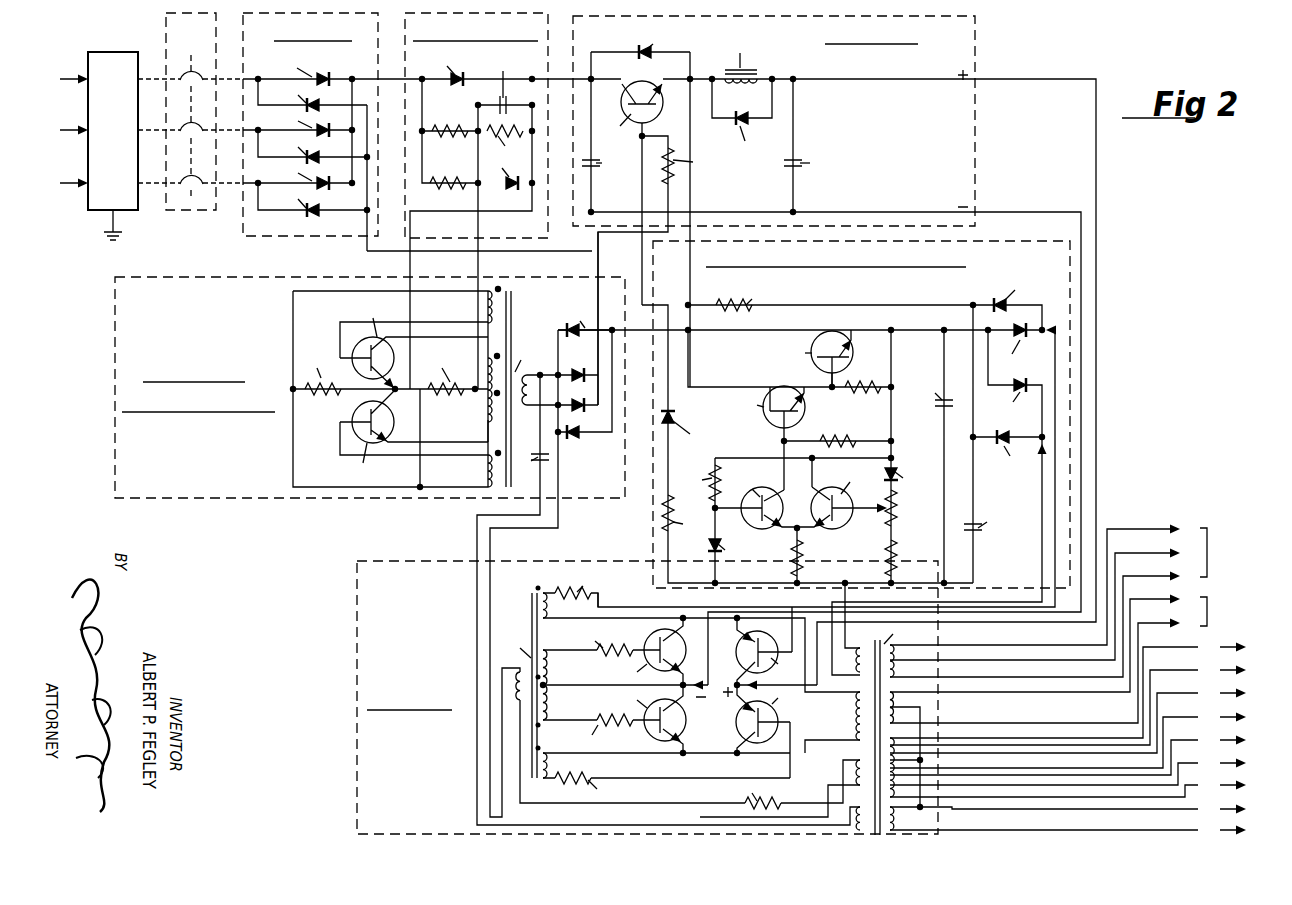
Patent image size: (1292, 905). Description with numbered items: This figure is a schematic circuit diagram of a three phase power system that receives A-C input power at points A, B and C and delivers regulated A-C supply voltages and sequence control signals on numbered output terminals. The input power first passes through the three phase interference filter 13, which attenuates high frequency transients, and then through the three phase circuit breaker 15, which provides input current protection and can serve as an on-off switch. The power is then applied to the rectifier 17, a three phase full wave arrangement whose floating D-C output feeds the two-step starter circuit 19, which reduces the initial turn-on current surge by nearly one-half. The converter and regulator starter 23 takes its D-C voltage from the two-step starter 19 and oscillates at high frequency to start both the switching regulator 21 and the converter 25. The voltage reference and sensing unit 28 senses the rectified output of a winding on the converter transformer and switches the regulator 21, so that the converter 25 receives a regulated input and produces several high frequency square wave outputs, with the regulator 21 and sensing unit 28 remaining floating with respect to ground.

The three phase interference filter 13 is at (87, 213).
The three phase circuit breaker 15 is at (192, 218).
The rectifier 17 is at (282, 240).
The two-step starter circuit 19 is at (548, 231).
The switching regulator 21 is at (977, 62).
The converter and regulator starter 23 is at (232, 502).
The converter 25 is at (356, 613).
The voltage reference and sensing unit 28 is at (650, 522).